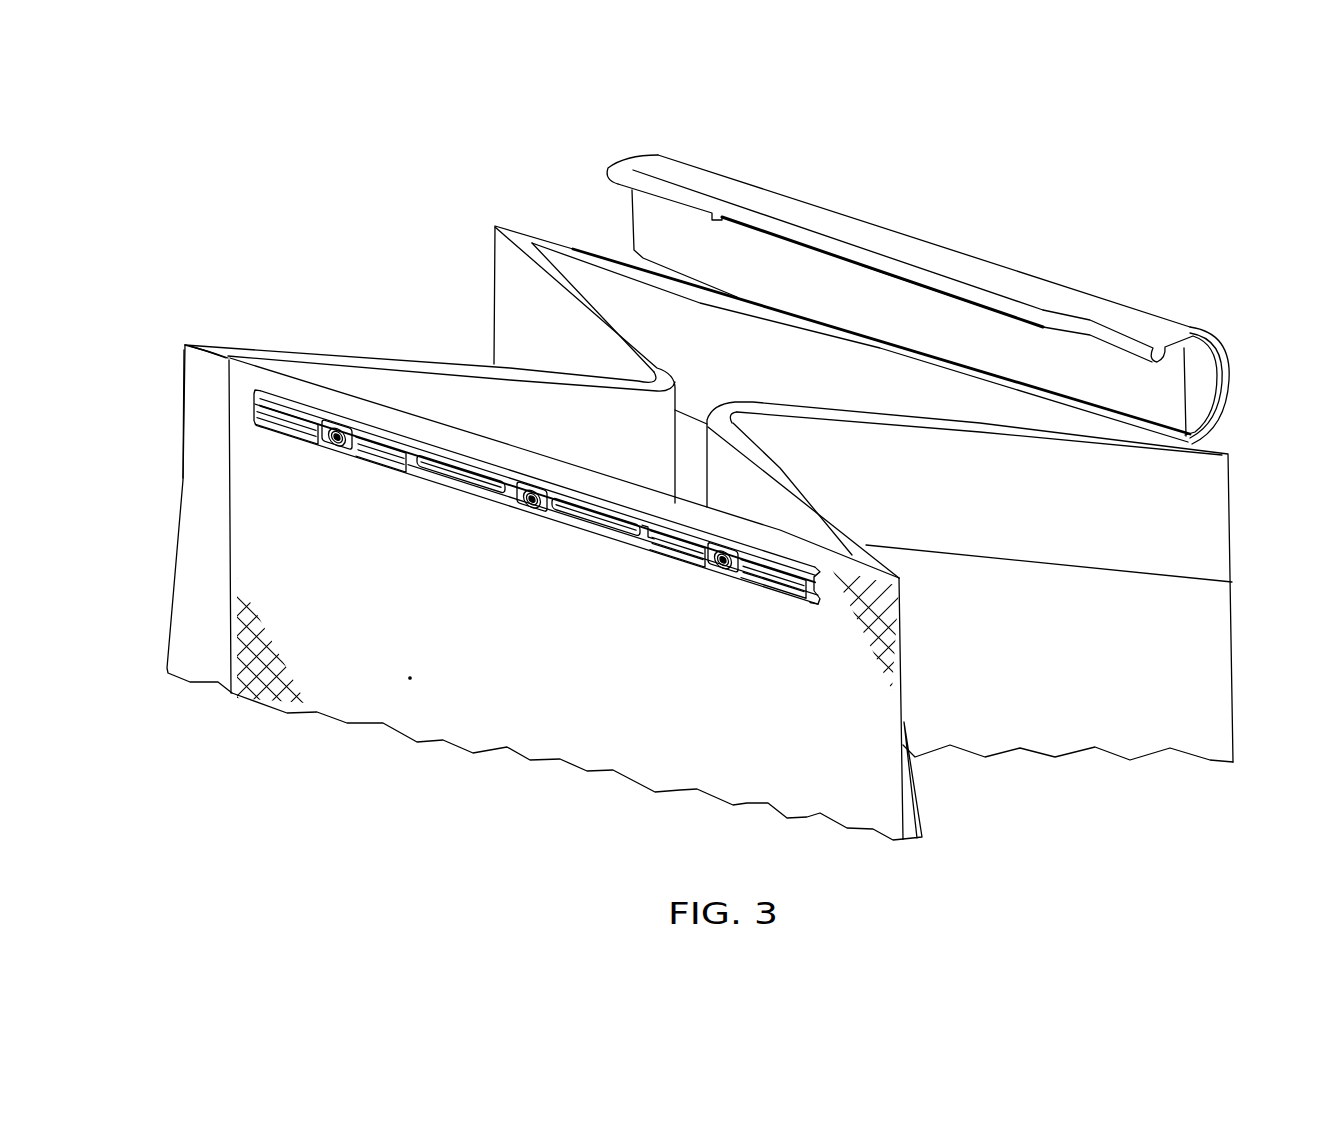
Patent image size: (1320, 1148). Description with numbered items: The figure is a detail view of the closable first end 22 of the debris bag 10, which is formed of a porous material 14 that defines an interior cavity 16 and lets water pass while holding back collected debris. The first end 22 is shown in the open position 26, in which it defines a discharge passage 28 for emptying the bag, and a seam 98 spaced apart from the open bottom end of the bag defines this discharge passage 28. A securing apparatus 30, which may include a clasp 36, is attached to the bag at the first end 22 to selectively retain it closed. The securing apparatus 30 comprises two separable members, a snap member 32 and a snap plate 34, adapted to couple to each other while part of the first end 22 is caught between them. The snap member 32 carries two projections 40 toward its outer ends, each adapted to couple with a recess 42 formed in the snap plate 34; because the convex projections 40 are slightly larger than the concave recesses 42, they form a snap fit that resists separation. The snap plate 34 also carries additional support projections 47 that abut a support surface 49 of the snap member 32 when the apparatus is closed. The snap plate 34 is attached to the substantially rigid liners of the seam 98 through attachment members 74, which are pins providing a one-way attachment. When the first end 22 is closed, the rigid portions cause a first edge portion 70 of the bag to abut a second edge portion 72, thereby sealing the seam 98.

The debris bag 10 is at (679, 481).
The porous material 14 is at (184, 462).
The interior cavity 16 is at (842, 364).
The closable first end 22 is at (563, 552).
The open position 26 is at (537, 381).
The discharge passage 28 is at (846, 434).
The securing apparatus 30 is at (935, 266).
The snap member 32 is at (857, 255).
The snap plate 34 is at (623, 559).
The clasp 36 is at (918, 266).
The projection 40 is at (924, 313).
The recess 42 is at (530, 543).
The support projection 47 is at (524, 516).
The support surface 49 is at (873, 305).
The first edge portion 70 is at (900, 373).
The second edge portion 72 is at (788, 381).
The attachment member 74 is at (527, 522).
The seam 98 is at (220, 307).